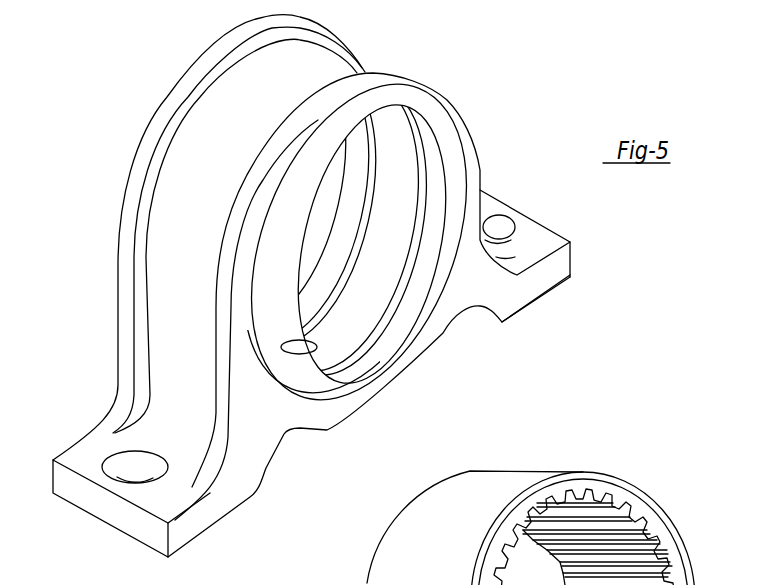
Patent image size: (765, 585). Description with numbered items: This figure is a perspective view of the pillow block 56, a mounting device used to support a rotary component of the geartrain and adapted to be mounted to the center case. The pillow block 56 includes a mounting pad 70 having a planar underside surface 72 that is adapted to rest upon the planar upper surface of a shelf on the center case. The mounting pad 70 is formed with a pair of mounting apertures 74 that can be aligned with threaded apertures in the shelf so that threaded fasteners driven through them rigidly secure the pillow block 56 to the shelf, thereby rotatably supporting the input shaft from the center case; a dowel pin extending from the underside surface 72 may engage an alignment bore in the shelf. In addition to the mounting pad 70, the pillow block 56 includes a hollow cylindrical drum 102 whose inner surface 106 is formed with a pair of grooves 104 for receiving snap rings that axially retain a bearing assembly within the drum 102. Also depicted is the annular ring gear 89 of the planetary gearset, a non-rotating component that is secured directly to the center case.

The pillow block 56 is at (401, 76).
The mounting pad 70 is at (540, 238).
The planar underside surface 72 is at (538, 292).
The mounting apertures 74 is at (507, 231).
The annular ring gear 89 is at (517, 493).
The hollow cylindrical drum 102 is at (222, 118).
The grooves 104 is at (327, 288).
The inner surface 106 is at (347, 374).